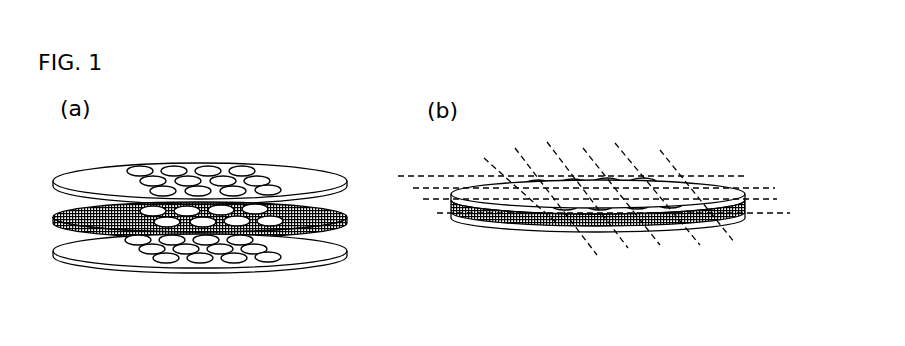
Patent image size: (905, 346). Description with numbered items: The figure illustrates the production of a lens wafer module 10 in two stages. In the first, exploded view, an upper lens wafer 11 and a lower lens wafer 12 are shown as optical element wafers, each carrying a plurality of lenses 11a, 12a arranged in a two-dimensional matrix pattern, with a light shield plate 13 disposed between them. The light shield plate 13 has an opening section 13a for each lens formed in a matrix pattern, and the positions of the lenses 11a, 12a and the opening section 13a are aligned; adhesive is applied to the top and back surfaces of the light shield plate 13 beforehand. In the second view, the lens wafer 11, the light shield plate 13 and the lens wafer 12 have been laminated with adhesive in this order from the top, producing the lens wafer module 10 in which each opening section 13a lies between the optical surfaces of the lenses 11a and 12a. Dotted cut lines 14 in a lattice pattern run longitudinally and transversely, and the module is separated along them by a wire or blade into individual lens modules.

The lens wafer module 10 is at (716, 140).
The lens wafer 11 is at (399, 160).
The lens 11a is at (266, 188).
The lens wafer 12 is at (418, 271).
The lens 12a is at (203, 258).
The light shield plate 13 is at (435, 248).
The opening section 13a is at (272, 224).
The cut lines 14 is at (662, 168).